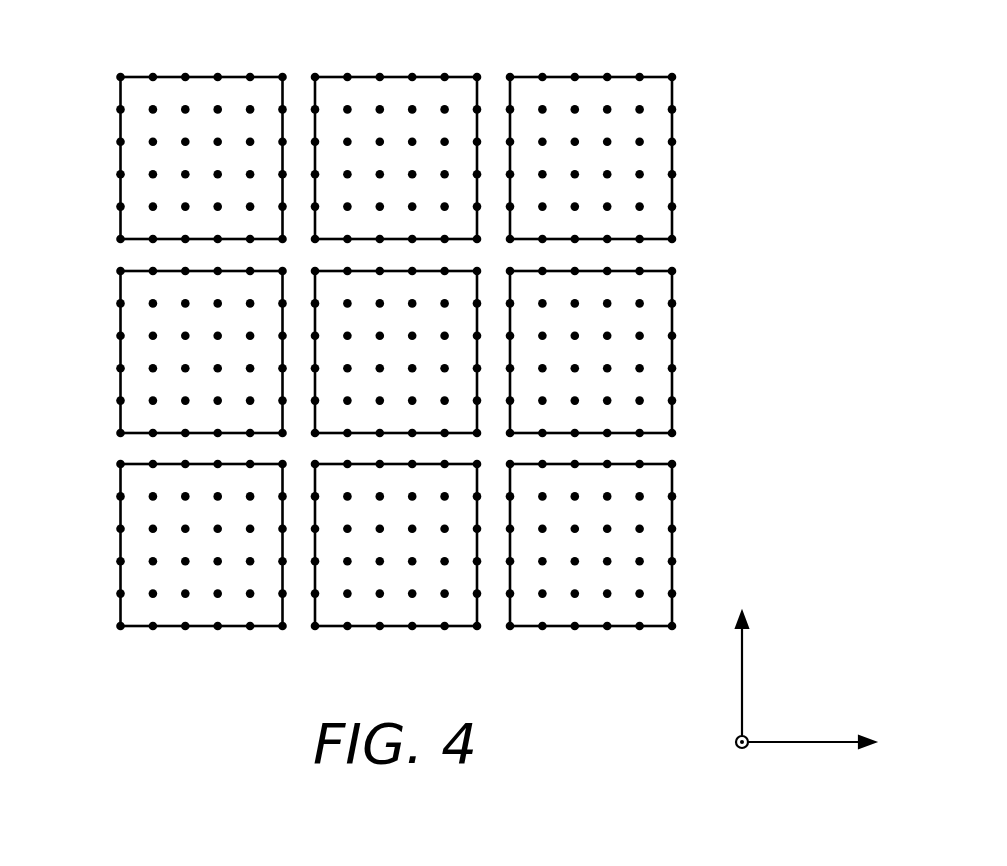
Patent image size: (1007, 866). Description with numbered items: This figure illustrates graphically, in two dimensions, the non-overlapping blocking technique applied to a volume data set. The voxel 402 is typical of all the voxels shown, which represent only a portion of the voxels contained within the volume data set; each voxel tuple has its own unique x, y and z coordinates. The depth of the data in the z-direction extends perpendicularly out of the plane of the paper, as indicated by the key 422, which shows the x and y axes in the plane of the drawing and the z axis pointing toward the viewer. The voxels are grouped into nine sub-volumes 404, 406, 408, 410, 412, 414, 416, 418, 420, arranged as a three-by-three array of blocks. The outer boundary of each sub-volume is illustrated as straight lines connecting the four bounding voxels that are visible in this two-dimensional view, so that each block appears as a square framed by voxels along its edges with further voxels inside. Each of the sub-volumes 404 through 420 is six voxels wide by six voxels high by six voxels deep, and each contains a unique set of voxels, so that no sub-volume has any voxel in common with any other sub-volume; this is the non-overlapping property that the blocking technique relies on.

The voxel 402 is at (406, 354).
The sub-volume 404 is at (120, 167).
The sub-volume 406 is at (395, 77).
The sub-volume 408 is at (672, 170).
The sub-volume 410 is at (120, 360).
The sub-volume 412 is at (398, 271).
The sub-volume 414 is at (672, 353).
The sub-volume 416 is at (120, 545).
The sub-volume 418 is at (390, 626).
The sub-volume 420 is at (672, 513).
The key 422 is at (742, 688).